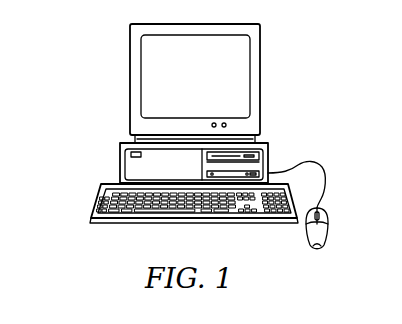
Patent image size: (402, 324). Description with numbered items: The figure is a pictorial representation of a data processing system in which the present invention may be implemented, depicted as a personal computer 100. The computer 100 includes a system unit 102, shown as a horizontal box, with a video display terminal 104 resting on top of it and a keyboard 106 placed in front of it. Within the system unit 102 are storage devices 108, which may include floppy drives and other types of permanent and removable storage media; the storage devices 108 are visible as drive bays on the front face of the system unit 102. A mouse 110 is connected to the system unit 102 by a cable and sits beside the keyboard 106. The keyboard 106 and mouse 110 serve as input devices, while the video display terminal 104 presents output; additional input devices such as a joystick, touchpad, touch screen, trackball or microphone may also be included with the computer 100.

The computer 100 is at (70, 60).
The system unit 102 is at (120, 163).
The video display terminal 104 is at (260, 81).
The keyboard 106 is at (115, 222).
The storage devices 108 is at (248, 156).
The mouse 110 is at (315, 248).